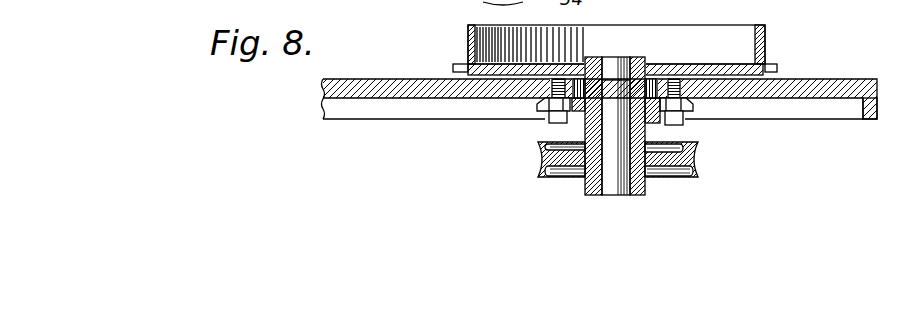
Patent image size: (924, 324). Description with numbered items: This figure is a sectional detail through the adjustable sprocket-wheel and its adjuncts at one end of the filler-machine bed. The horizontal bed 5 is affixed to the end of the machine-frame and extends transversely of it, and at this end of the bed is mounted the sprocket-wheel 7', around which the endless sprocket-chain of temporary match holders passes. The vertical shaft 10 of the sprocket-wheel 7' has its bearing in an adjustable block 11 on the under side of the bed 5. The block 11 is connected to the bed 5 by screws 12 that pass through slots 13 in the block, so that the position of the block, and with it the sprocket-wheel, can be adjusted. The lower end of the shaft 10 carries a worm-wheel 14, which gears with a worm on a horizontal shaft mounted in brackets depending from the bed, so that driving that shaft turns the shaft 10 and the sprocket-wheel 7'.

The horizontal bed 5 is at (363, 79).
The sprocket-wheel 7' is at (607, 50).
The vertical shaft 10 is at (623, 197).
The adjustable block 11 is at (540, 106).
The screws 12 is at (552, 118).
The slots 13 is at (547, 110).
The worm-wheel 14 is at (693, 173).